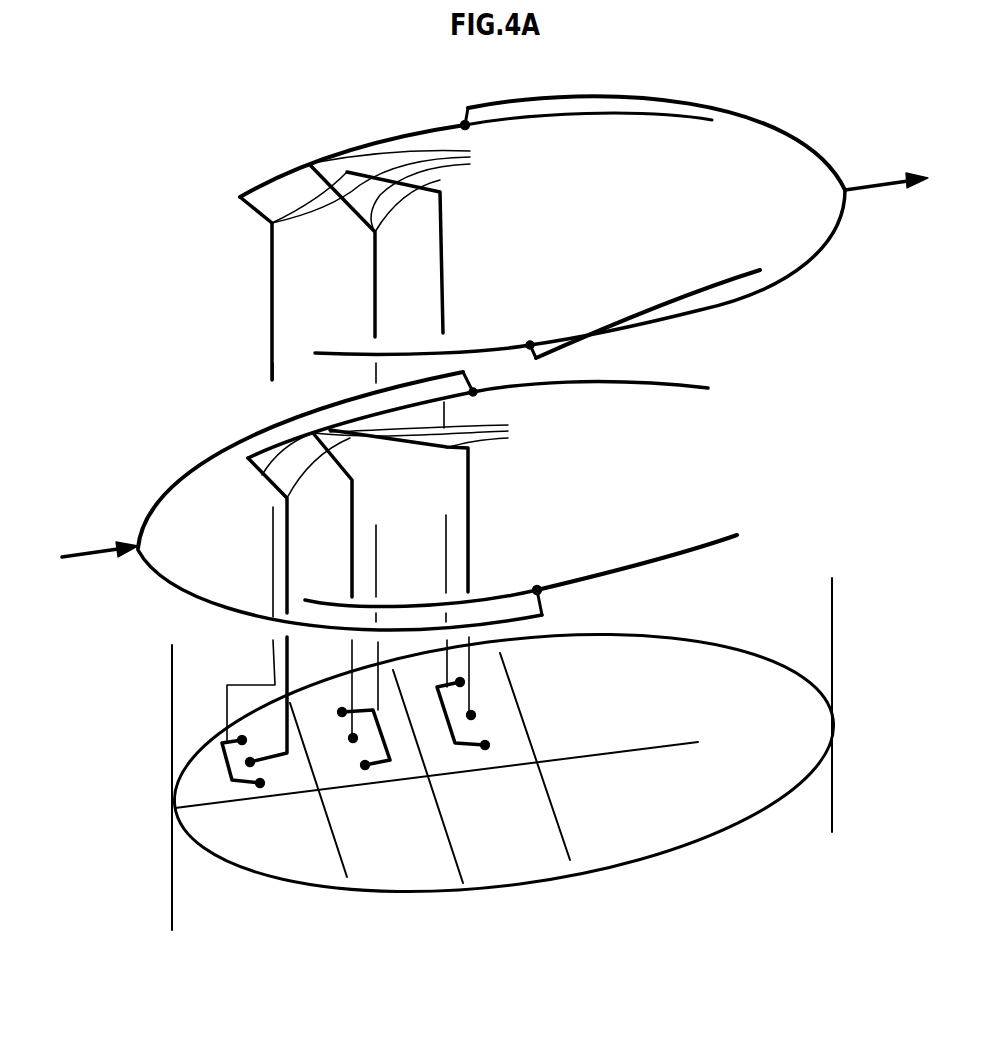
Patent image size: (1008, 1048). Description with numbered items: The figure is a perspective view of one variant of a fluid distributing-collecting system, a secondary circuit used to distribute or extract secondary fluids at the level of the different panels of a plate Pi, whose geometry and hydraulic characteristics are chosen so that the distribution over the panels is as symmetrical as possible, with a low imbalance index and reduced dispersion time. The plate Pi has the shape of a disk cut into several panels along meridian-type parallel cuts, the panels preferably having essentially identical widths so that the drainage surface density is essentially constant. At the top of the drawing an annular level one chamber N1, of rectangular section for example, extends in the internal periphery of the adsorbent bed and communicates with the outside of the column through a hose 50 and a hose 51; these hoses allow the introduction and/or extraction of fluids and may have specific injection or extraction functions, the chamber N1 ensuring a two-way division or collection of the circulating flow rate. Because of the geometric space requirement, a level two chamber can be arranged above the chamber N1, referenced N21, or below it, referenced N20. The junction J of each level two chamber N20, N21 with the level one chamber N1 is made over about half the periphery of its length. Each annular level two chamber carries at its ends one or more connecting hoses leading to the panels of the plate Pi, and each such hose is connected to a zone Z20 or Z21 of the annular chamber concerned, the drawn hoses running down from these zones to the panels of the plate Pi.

The annular level 1 chamber N1 is at (683, 97).
The junction J is at (457, 120).
The hose 51 is at (863, 178).
The hose 50 is at (103, 543).
The annular level 2 chamber N21 is at (600, 328).
The annular level 2 chamber N20 is at (578, 587).
The connection zone Z21 is at (307, 147).
The connection zone Z20 is at (297, 400).
The plate Pi is at (583, 837).